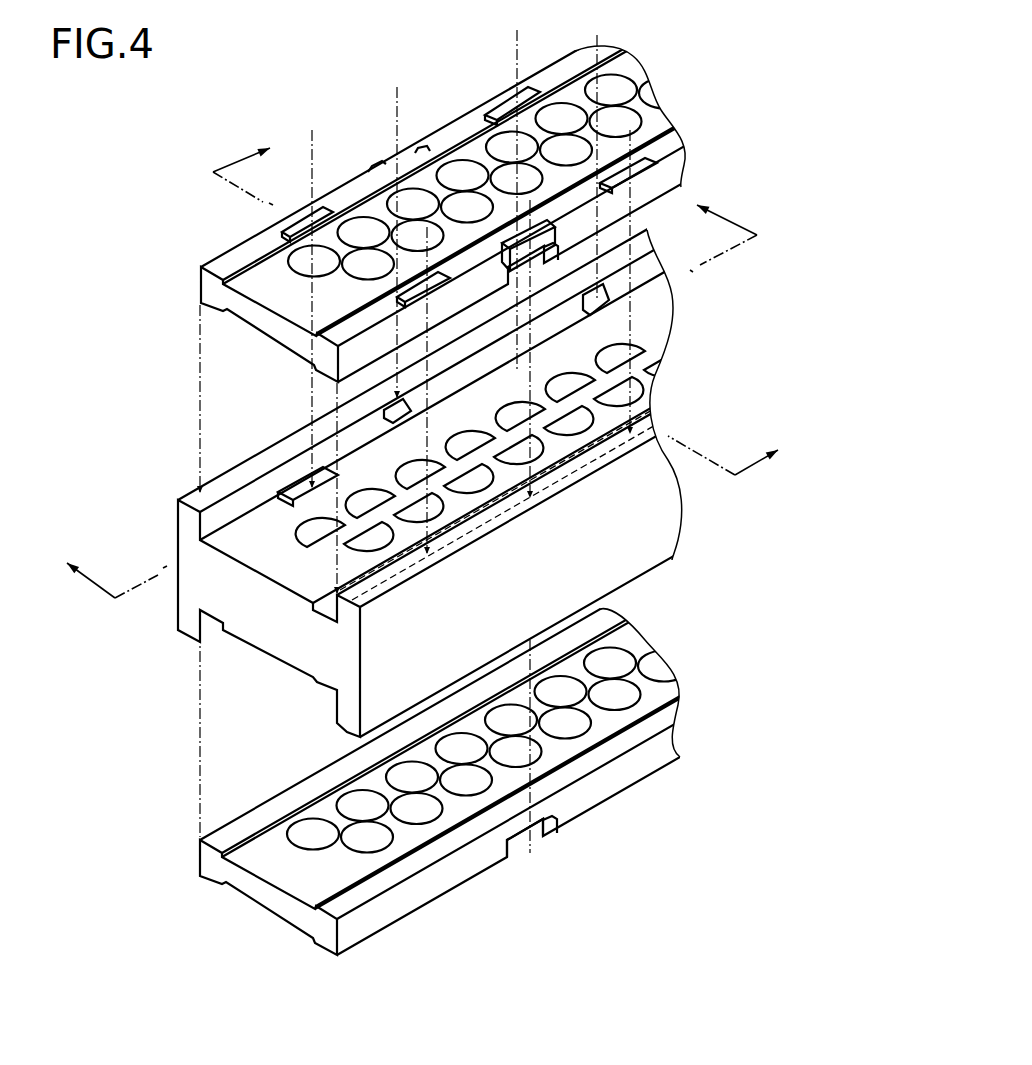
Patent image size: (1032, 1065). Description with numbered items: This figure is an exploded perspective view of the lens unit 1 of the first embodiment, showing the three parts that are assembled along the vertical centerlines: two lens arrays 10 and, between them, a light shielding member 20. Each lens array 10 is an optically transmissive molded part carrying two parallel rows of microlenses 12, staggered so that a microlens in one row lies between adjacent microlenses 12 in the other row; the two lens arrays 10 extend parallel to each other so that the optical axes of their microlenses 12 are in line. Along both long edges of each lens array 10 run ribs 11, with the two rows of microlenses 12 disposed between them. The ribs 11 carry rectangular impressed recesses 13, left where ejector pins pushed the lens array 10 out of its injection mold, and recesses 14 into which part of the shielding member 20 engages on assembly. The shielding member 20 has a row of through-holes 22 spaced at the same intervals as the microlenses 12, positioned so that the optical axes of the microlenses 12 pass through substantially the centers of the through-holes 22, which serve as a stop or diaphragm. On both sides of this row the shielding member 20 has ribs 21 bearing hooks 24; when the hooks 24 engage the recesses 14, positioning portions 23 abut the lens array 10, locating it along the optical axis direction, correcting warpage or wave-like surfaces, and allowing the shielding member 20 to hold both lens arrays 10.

The lens unit 1 is at (175, 168).
The lens array 10 is at (343, 201).
The rib 11 is at (367, 183).
The microlens 12 is at (494, 147).
The impressed recess 13 is at (502, 110).
The recess 14 is at (410, 152).
The light shielding member 20 is at (190, 498).
The rib 21 is at (235, 481).
The through-hole 22 is at (301, 534).
The positioning portion 23 is at (301, 484).
The hook 24 is at (396, 417).